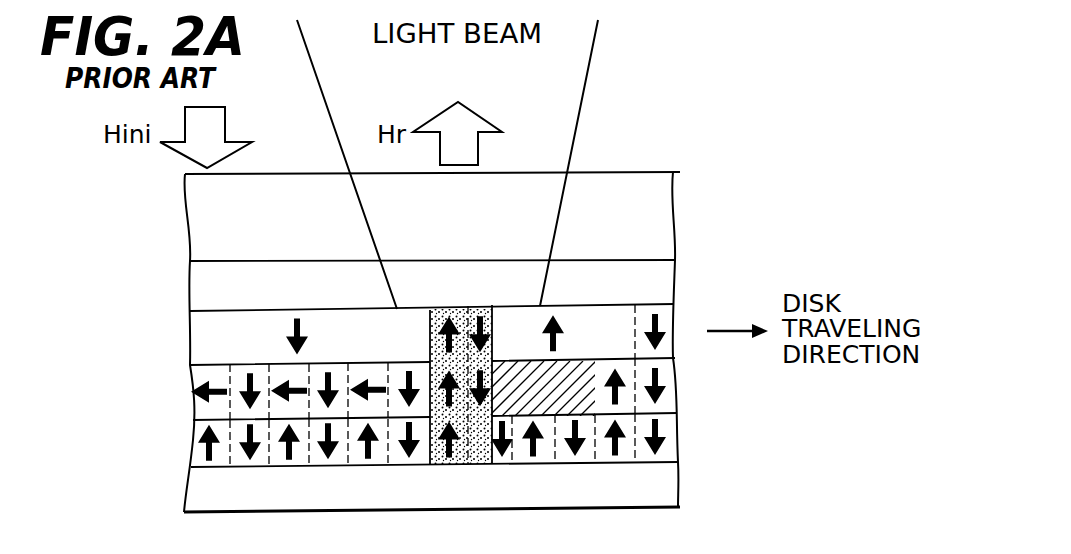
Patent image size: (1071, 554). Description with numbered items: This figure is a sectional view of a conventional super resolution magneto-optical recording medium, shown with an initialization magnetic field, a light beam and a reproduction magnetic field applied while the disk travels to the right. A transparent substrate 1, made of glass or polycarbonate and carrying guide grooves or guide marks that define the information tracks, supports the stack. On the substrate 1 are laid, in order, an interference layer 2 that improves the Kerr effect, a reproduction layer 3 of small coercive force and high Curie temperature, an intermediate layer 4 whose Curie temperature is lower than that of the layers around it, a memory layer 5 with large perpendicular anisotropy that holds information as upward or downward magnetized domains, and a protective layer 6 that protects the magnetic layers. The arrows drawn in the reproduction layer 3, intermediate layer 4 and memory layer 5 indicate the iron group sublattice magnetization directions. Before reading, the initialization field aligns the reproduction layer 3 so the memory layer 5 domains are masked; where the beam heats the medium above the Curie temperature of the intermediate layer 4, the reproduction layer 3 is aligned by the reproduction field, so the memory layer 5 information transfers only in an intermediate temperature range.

The substrate 1 is at (196, 205).
The interference layer 2 is at (196, 278).
The reproduction layer 3 is at (196, 330).
The intermediate layer 4 is at (200, 382).
The memory layer 5 is at (202, 455).
The protective layer 6 is at (198, 503).